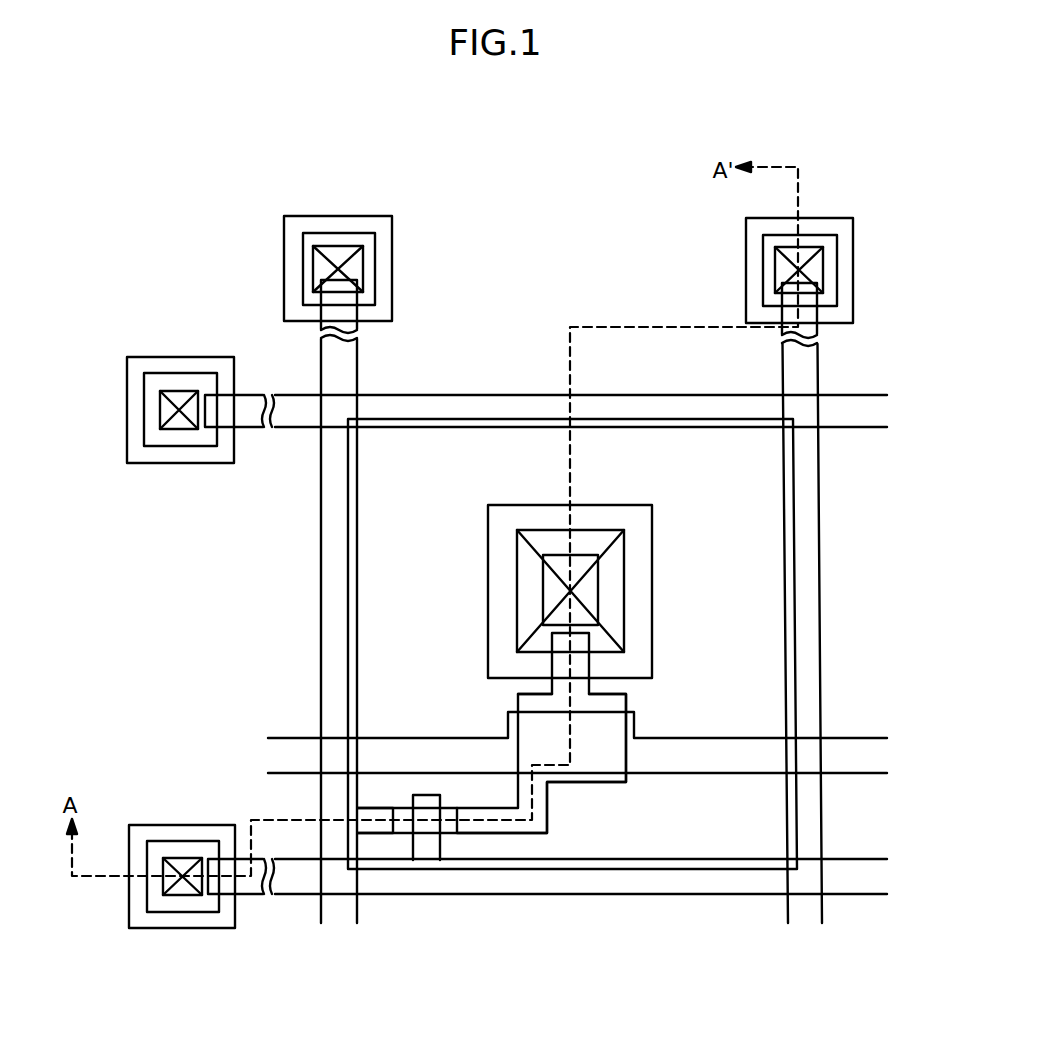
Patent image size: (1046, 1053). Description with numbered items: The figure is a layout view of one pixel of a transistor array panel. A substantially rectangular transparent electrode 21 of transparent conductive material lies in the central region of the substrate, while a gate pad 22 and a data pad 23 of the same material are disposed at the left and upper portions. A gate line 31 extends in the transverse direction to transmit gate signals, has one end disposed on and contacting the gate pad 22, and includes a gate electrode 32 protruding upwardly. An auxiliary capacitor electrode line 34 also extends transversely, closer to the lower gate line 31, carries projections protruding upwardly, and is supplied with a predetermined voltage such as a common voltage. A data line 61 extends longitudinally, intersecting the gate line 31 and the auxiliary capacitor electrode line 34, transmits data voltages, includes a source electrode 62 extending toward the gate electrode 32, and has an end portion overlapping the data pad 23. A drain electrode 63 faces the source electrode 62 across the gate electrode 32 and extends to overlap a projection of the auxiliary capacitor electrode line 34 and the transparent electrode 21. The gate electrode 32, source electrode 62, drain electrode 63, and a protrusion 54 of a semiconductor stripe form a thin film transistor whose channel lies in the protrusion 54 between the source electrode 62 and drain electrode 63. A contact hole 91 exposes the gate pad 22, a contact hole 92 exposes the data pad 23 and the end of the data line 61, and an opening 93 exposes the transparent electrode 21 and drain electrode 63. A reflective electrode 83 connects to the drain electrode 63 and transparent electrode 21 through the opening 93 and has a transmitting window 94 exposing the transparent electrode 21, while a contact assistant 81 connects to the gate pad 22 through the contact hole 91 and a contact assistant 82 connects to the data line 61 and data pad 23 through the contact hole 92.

The transparent electrode 21 is at (652, 540).
The gate pad 22 is at (170, 912).
The data pad 23 is at (837, 290).
The gate line 31 is at (473, 395).
The gate electrode 32 is at (440, 850).
The auxiliary capacitor electrode line 34 is at (290, 738).
The protrusion 54 is at (445, 808).
The data line 61 is at (322, 575).
The source electrode 62 is at (380, 835).
The drain electrode 63 is at (605, 783).
The contact assistant 81 is at (215, 928).
The contact assistant 82 is at (853, 237).
The reflective electrode 83 is at (794, 532).
The contact hole 91 is at (180, 858).
The contact hole 92 is at (775, 263).
The opening 93 is at (624, 595).
The transmitting window 94 is at (543, 580).